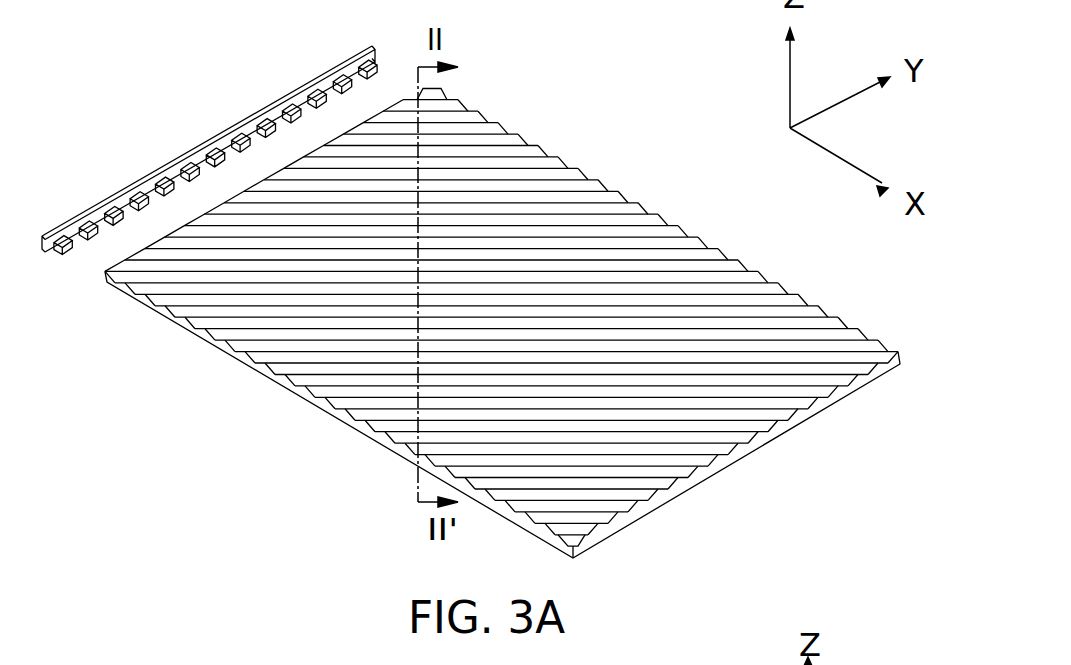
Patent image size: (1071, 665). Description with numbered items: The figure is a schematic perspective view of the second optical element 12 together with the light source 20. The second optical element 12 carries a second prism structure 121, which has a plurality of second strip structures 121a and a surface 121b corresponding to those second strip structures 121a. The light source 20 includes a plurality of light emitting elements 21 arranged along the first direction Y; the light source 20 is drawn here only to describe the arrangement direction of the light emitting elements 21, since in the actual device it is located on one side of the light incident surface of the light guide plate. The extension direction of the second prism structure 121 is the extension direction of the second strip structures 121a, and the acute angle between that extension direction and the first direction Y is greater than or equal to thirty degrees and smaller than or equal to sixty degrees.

The second optical element 12 is at (592, 141).
The light source 20 is at (173, 131).
The light emitting elements 21 is at (87, 231).
The second prism structure 121 is at (194, 336).
The second strip structures 121a is at (829, 323).
The surface 121b is at (780, 437).